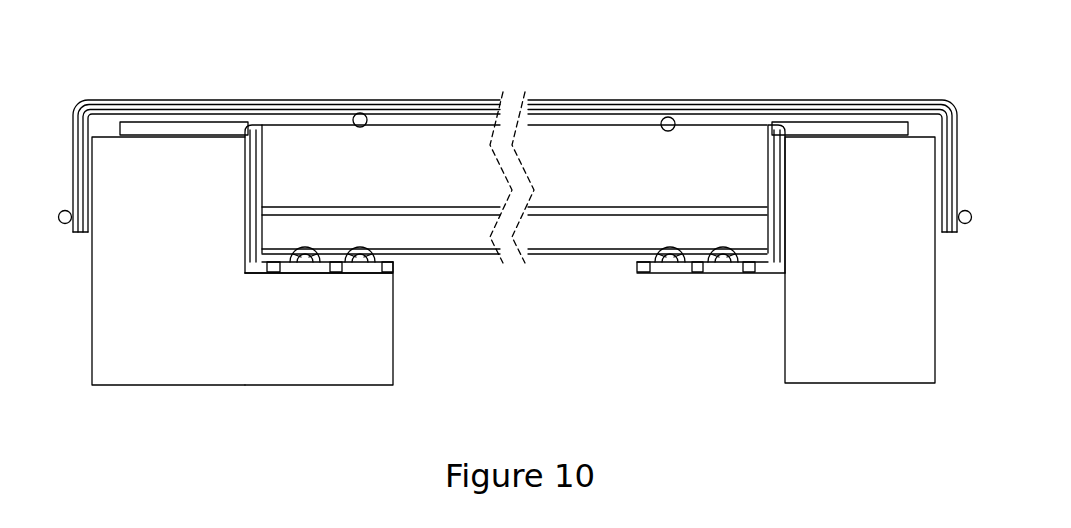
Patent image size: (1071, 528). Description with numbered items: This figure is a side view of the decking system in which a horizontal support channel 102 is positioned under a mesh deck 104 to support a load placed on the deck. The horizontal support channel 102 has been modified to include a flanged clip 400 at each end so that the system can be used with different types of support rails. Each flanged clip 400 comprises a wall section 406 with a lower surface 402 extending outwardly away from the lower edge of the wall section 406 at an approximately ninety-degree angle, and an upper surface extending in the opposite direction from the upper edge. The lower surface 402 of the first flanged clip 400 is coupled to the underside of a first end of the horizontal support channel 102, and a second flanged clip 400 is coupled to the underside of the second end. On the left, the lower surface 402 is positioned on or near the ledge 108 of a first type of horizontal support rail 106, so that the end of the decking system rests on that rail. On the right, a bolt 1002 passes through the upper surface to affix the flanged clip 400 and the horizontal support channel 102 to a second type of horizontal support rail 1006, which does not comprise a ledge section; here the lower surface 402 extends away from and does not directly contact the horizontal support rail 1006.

The horizontal support channel 102 is at (588, 156).
The mesh deck 104 is at (460, 103).
The horizontal support rail 106 is at (183, 360).
The ledge 108 is at (352, 345).
The flanged clip 400 is at (211, 130).
The lower surface 402 is at (333, 263).
The wall section 406 is at (253, 215).
The bolt 1002 is at (847, 118).
The horizontal support rail 1006 is at (860, 353).